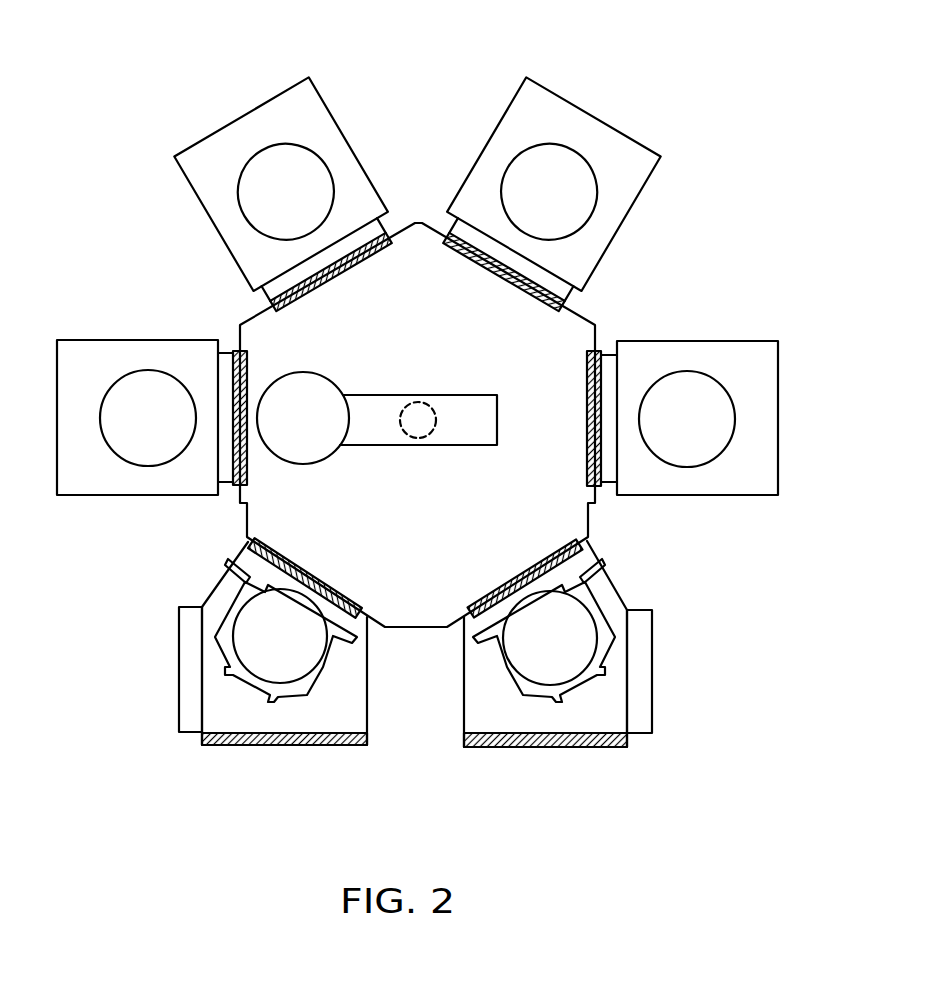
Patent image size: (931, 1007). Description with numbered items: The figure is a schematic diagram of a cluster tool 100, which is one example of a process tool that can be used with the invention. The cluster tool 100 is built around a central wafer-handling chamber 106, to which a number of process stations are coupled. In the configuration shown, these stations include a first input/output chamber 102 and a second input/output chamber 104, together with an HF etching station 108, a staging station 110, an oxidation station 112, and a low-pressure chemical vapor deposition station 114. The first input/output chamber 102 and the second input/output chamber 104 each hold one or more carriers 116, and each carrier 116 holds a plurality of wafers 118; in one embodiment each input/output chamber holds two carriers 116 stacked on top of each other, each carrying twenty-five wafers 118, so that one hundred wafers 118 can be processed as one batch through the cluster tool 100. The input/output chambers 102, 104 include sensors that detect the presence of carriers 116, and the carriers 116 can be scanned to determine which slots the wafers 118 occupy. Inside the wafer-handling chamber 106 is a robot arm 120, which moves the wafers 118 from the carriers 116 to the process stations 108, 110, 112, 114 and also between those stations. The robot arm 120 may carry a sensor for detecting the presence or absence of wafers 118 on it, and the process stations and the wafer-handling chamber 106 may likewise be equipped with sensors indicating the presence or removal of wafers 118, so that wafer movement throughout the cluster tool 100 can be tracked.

The cluster tool 100 is at (177, 40).
The first input/output chamber 102 is at (250, 713).
The second input/output chamber 104 is at (570, 713).
The central wafer-handling chamber 106 is at (434, 628).
The HF etching station 108 is at (118, 339).
The staging station 110 is at (245, 111).
The oxidation station 112 is at (582, 103).
The low-pressure chemical vapor deposition (LPCVD) station 114 is at (668, 340).
The carrier 116 is at (243, 566).
The wafer 118 is at (255, 633).
The robot arm 120 is at (313, 467).